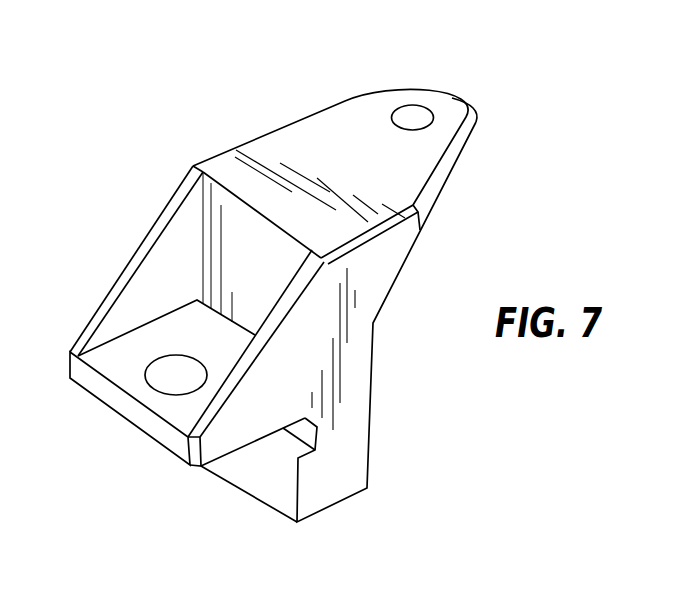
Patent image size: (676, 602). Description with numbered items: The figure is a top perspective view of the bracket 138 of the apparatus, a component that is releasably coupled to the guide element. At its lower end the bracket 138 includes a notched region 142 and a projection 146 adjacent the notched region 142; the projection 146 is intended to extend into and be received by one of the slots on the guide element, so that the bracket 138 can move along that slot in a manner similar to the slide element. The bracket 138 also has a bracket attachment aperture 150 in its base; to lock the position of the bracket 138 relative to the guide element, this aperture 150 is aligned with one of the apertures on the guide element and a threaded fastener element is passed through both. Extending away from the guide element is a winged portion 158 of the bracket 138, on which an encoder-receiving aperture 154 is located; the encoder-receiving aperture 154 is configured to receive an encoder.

The bracket 138 is at (128, 156).
The winged portion 158 is at (373, 117).
The encoder-receiving aperture 154 is at (415, 118).
The bracket attachment aperture 150 is at (158, 375).
The notched region 142 is at (318, 438).
The projection 146 is at (272, 475).